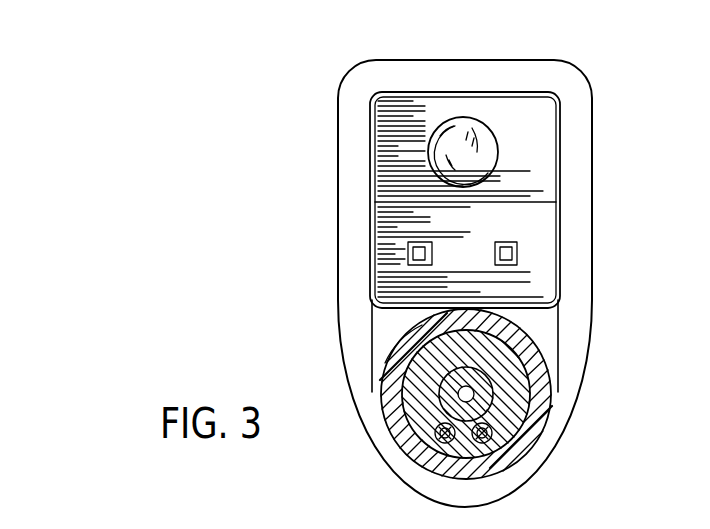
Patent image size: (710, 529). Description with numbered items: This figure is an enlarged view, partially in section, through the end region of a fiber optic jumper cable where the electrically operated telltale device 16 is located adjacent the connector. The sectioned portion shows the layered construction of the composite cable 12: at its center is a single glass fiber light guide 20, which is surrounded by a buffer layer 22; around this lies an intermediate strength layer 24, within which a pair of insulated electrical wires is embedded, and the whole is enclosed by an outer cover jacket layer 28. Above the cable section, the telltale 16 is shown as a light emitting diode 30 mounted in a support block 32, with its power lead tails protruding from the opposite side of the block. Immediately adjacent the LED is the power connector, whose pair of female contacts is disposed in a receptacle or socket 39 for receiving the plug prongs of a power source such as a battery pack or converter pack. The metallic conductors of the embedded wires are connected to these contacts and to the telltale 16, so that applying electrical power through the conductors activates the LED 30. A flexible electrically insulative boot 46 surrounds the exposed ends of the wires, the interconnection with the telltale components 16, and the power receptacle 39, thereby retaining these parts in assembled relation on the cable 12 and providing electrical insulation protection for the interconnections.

The composite cable 12 is at (538, 340).
The electrically operated telltale device 16 is at (487, 120).
The single glass fiber light guide 20 is at (473, 393).
The buffer layer 22 is at (466, 402).
The intermediate strength layer 24 is at (410, 395).
The outer cover jacket layer 28 is at (530, 432).
The light emitting diode 30 is at (443, 142).
The support block 32 is at (375, 174).
The receptacle or socket 39 is at (537, 226).
The flexible electrically insulative boot 46 is at (582, 108).